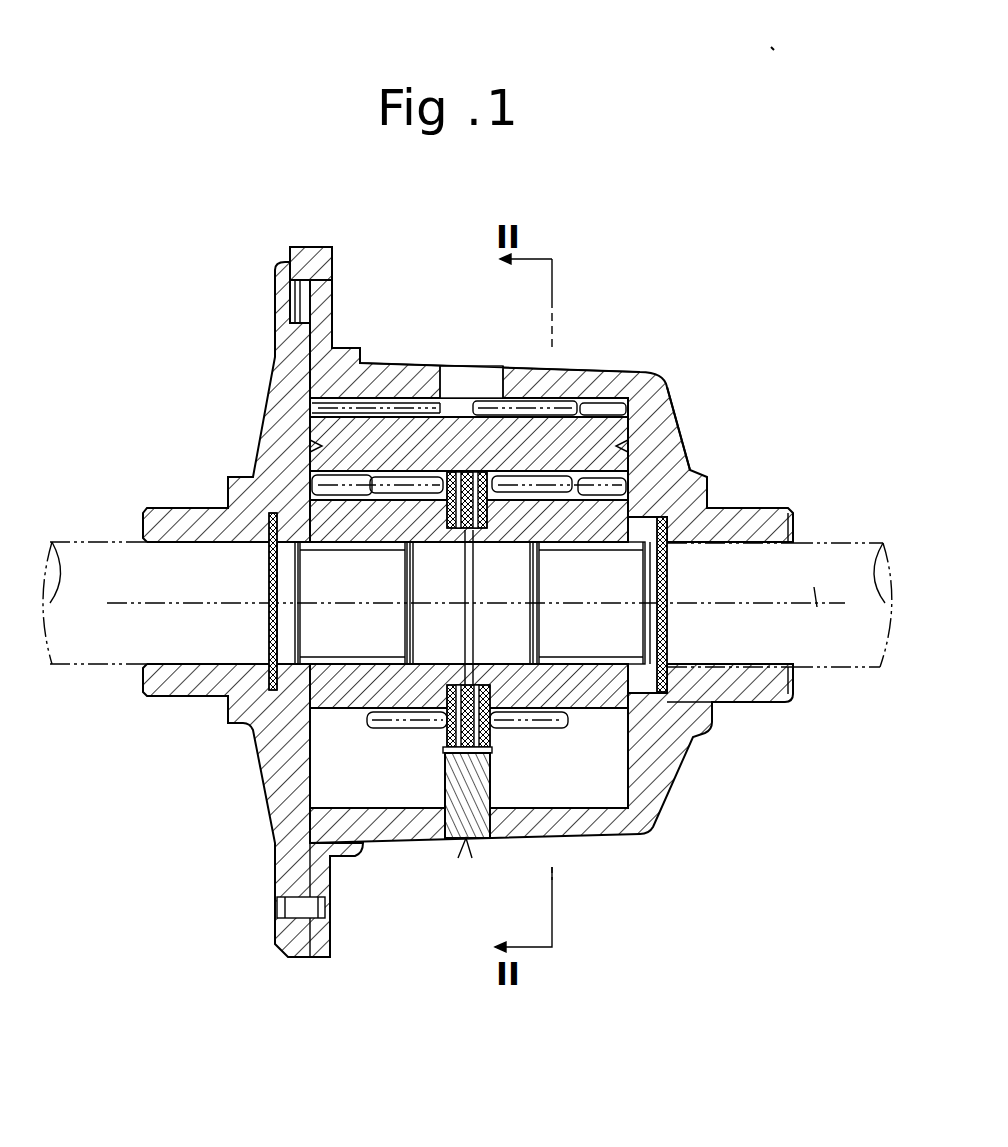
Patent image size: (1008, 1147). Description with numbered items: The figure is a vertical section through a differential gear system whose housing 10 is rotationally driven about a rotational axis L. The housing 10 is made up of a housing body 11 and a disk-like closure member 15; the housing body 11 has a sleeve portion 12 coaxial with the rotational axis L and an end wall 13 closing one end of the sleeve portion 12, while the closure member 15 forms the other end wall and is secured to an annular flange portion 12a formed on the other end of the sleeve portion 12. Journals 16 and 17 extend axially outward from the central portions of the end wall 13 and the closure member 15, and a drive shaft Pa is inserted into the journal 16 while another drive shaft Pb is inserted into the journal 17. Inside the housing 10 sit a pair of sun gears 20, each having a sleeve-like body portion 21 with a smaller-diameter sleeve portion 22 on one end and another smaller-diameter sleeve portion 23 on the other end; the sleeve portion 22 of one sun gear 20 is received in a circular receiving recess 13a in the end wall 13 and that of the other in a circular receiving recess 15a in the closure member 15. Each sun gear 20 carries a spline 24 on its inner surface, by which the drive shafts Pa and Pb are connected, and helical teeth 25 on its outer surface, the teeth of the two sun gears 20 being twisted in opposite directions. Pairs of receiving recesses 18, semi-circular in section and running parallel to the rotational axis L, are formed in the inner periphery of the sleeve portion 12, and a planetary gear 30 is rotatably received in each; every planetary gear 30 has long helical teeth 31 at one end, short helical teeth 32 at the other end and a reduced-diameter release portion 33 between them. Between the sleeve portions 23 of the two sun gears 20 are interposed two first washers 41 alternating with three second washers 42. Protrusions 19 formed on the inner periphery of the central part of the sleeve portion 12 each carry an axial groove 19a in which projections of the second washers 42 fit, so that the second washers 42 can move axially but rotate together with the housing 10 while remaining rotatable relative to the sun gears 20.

The housing 10 is at (667, 366).
The housing body 11 is at (564, 374).
The sleeve portion 12 is at (607, 400).
The annular flange portion 12a is at (333, 262).
The end wall 13 is at (683, 440).
The circular receiving recess 13a is at (664, 520).
The closure member 15 is at (264, 425).
The circular receiving recess 15a is at (283, 518).
The journal 16 is at (754, 510).
The journal 17 is at (173, 508).
The receiving recess 18 is at (395, 396).
The protrusion 19 is at (444, 782).
The groove 19a is at (490, 744).
The sun gear 20 is at (328, 710).
The body portion 21 is at (347, 702).
The sleeve portion 22 is at (262, 752).
The sleeve portion 23 is at (460, 670).
The spline 24 is at (343, 657).
The helical teeth 25 is at (544, 731).
The planetary gear 30 is at (465, 419).
The long helical teeth 31 is at (344, 402).
The short helical teeth 32 is at (608, 405).
The reduced-diameter release portion 33 is at (515, 401).
The first washer 41 is at (484, 473).
The second washer 42 is at (466, 863).
The drive shaft Pa is at (852, 545).
The drive shaft Pb is at (86, 542).
The rotational axis L is at (812, 579).